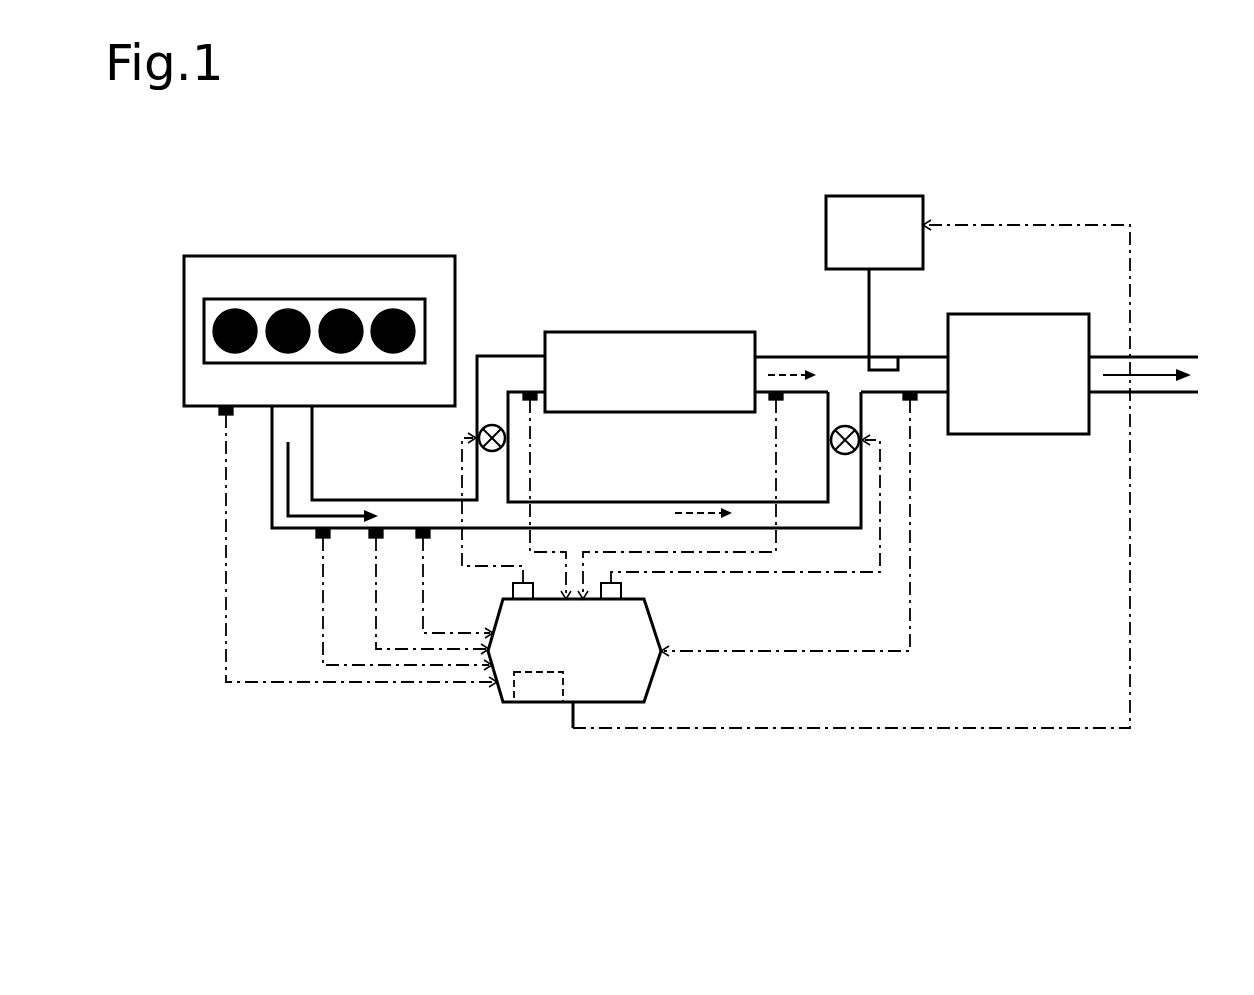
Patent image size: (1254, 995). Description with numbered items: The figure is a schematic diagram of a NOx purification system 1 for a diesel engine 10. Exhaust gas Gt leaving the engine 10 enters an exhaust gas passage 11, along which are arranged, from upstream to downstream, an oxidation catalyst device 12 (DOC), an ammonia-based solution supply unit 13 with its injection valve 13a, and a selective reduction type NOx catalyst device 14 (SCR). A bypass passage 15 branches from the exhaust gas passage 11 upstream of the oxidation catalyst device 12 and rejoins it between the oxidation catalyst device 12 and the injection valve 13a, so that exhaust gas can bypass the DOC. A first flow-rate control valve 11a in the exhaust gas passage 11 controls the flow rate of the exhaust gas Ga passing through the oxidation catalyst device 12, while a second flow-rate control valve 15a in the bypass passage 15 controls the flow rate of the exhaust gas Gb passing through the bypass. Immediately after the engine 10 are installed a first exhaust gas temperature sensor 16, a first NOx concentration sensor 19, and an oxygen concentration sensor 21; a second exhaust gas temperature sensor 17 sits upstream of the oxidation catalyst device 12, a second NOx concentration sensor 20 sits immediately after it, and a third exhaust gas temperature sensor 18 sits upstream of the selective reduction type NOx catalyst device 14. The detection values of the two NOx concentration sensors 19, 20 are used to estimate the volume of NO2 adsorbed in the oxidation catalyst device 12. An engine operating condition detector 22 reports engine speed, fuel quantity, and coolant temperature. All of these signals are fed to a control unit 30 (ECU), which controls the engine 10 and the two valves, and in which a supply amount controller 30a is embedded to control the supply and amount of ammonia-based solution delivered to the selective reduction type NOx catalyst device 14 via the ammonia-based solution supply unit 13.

The NOx purification system 1 is at (630, 288).
The diesel engine 10 is at (370, 256).
The exhaust gas passage 11 is at (789, 357).
The first flow-rate control valve 11a is at (492, 424).
The oxidation catalyst device 12 is at (686, 332).
The ammonia-based solution supply unit 13 is at (885, 196).
The injection valve 13a is at (883, 370).
The selective reduction type NOx catalyst device 14 is at (993, 434).
The bypass passage 15 is at (612, 502).
The second flow-rate control valve 15a is at (850, 455).
The first exhaust gas temperature sensor 16 is at (420, 540).
The second exhaust gas temperature sensor 17 is at (533, 400).
The third exhaust gas temperature sensor 18 is at (910, 400).
The first NOx concentration sensor 19 is at (372, 540).
The second NOx concentration sensor 20 is at (776, 400).
The oxygen concentration sensor 21 is at (320, 540).
The engine operating condition detector 22 is at (226, 415).
The control unit 30 is at (603, 703).
The supply amount controller 30a is at (532, 690).